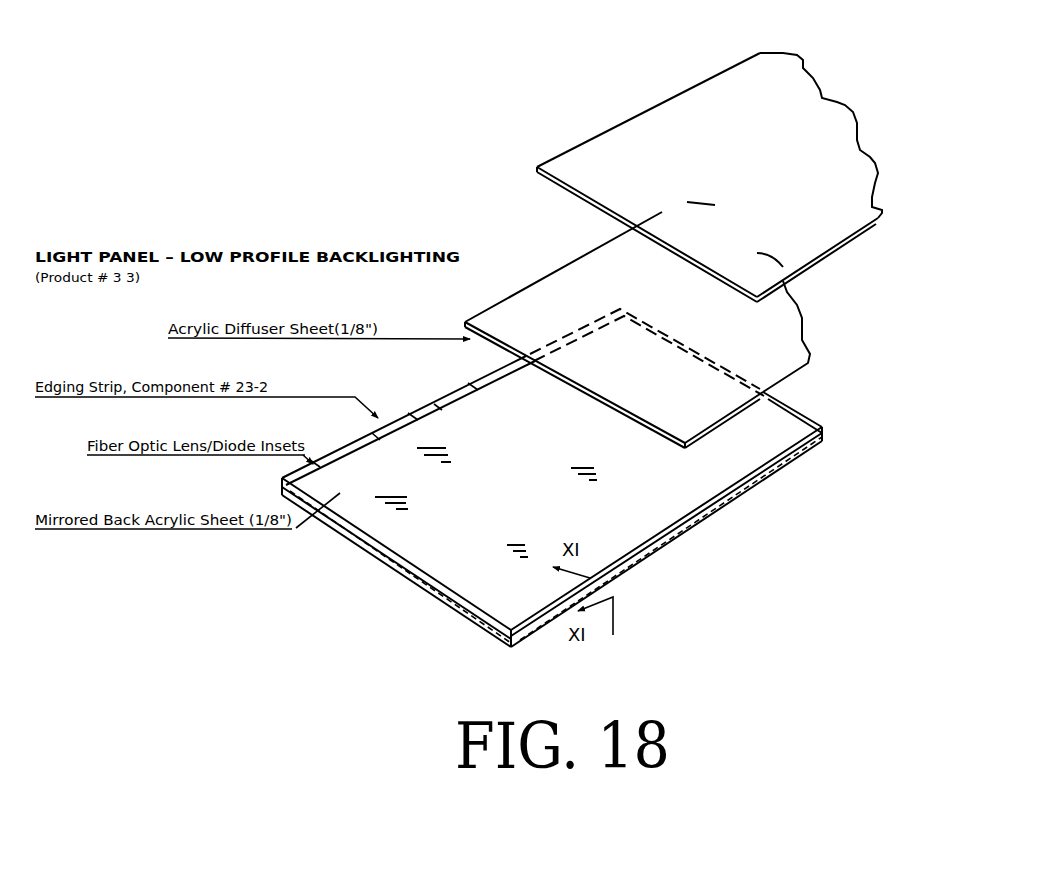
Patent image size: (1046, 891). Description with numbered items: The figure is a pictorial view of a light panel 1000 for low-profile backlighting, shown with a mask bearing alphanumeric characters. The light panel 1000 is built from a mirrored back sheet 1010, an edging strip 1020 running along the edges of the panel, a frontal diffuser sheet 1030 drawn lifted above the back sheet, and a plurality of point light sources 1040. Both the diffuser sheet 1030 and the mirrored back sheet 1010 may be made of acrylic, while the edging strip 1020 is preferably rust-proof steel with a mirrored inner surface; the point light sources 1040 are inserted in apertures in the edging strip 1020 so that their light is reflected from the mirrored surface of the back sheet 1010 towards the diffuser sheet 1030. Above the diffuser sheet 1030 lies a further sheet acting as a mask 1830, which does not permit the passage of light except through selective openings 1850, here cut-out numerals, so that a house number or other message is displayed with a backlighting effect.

The light panel 1000 is at (363, 568).
The mirrored back sheet 1010 is at (620, 528).
The edging strip 1020 is at (412, 412).
The frontal diffuser sheet 1030 is at (610, 255).
The point light sources 1040 is at (438, 407).
The mask 1830 is at (687, 102).
The selective openings 1850 is at (705, 163).